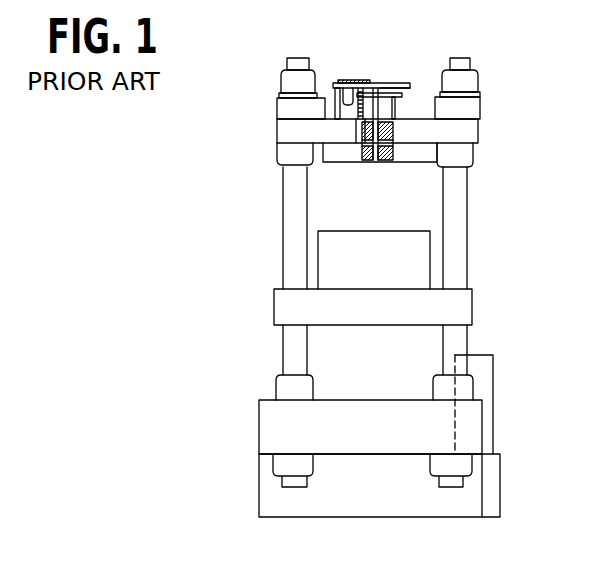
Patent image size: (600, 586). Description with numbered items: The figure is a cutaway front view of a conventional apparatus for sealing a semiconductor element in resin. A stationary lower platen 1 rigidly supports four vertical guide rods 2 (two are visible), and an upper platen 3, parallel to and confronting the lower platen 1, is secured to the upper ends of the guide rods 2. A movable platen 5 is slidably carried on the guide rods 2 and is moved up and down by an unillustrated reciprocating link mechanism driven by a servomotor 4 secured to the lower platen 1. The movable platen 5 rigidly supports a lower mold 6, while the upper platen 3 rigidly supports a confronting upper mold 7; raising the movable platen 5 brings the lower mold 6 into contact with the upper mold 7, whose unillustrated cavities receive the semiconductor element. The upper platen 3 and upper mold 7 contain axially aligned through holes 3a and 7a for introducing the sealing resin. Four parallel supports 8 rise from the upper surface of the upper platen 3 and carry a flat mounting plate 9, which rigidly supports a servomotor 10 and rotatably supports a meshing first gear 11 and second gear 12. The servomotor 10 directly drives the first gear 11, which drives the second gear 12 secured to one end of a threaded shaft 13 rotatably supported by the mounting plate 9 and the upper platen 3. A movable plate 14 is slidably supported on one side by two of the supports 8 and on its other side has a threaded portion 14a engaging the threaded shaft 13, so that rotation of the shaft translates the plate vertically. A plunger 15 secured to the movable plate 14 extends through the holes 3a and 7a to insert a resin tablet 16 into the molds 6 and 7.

The stationary lower platen 1 is at (259, 432).
The vertical guide rods 2 is at (467, 217).
The upper platen 3 is at (478, 130).
The through hole 3a is at (367, 161).
The servomotor 4 is at (493, 390).
The movable platen 5 is at (472, 302).
The lower mold 6 is at (430, 252).
The upper mold 7 is at (427, 152).
The through hole 7a is at (387, 152).
The parallel supports 8 is at (334, 90).
The flat mounting plate 9 is at (400, 90).
The servomotor 10 is at (350, 123).
The first gear 11 is at (338, 83).
The second gear 12 is at (369, 83).
The threaded shaft 13 is at (355, 138).
The movable plate 14 is at (403, 97).
The threaded portion 14a is at (383, 83).
The plunger 15 is at (390, 86).
The resin tablet 16 is at (395, 148).